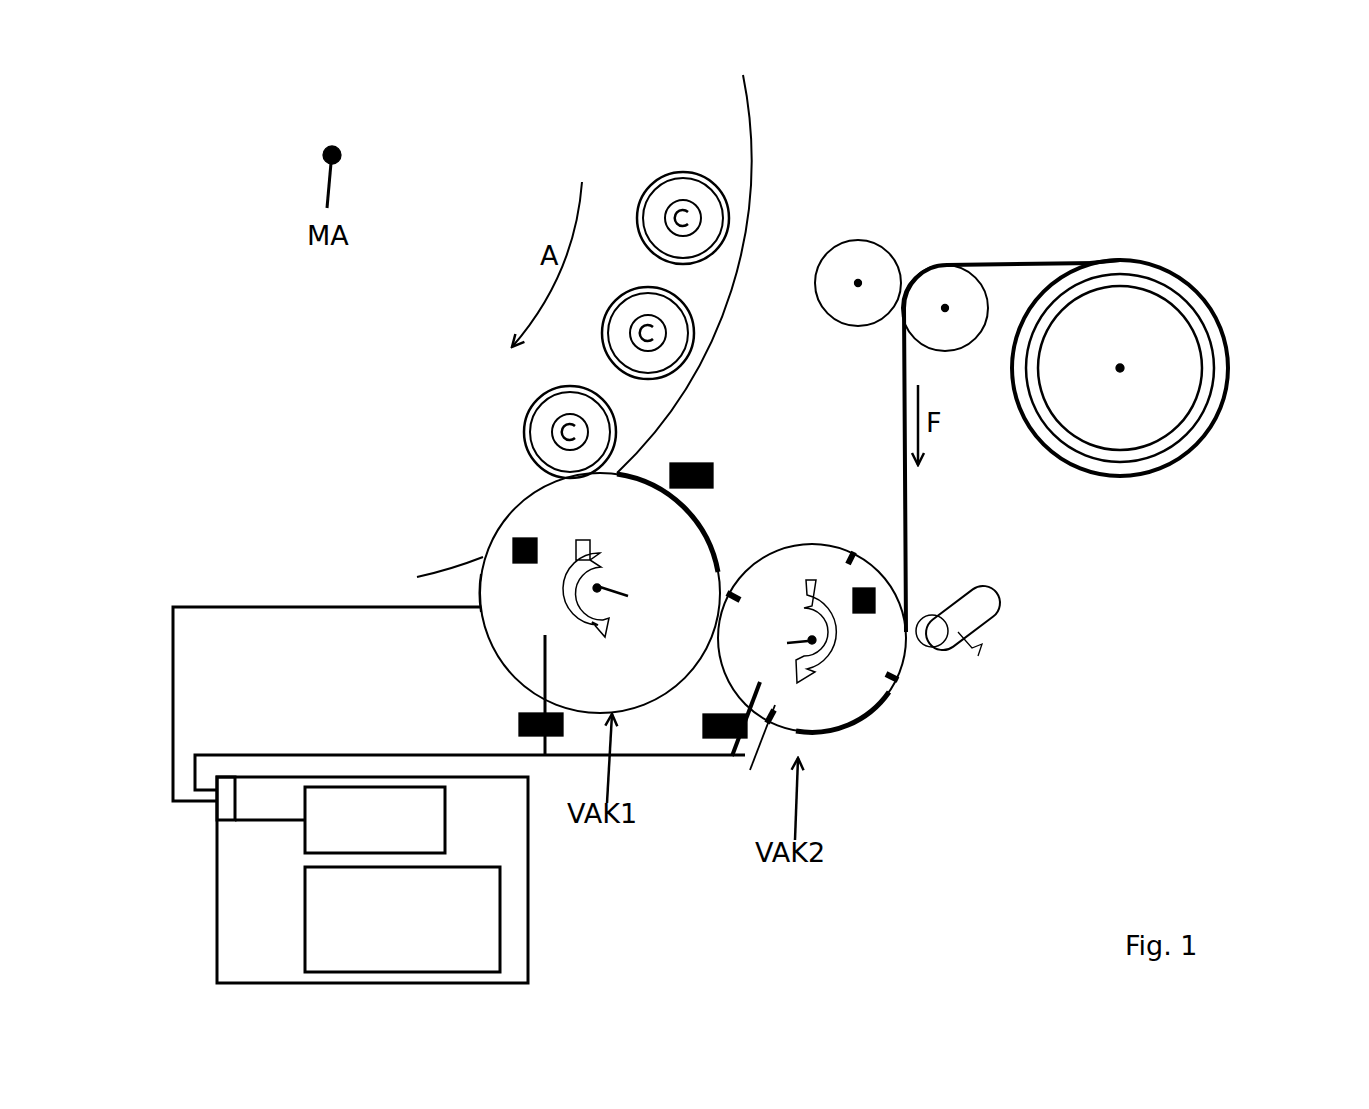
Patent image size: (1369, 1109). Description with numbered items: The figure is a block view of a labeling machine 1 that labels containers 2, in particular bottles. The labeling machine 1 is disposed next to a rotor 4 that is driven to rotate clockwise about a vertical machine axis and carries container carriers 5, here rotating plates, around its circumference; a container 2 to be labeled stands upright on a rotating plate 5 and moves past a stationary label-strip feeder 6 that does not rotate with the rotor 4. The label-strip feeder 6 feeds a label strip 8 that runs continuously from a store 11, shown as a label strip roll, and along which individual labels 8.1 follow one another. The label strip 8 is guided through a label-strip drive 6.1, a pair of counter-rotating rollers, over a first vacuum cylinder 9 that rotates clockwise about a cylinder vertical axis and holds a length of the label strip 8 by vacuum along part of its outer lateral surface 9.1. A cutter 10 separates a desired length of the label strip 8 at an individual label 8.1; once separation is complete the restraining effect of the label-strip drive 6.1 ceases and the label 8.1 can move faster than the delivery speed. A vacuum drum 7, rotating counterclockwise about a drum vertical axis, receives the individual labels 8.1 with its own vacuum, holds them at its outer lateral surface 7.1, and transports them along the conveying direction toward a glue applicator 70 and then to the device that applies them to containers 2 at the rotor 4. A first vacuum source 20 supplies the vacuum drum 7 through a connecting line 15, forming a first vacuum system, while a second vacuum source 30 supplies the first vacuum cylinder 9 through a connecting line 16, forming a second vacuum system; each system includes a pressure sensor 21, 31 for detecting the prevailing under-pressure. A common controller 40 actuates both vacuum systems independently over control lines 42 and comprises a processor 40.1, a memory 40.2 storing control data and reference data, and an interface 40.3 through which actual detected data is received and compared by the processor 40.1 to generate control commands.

The labeling machine 1 is at (982, 155).
The containers 2 is at (684, 195).
The rotor 4 is at (723, 115).
The container carriers 5 is at (702, 178).
The label-strip feeder 6 is at (832, 405).
The label-strip drive 6.1 is at (909, 250).
The vacuum drum 7 is at (447, 618).
The outer lateral surface 7.1 is at (484, 646).
The label strip 8 is at (1057, 258).
The individual labels 8.1 is at (715, 541).
The first vacuum cylinder 9 is at (905, 722).
The outer lateral surface 9.1 is at (744, 758).
The cutter 10 is at (945, 643).
The store 11 is at (1152, 343).
The connecting line 15 is at (548, 663).
The connecting line 16 is at (752, 690).
The first vacuum source 20 is at (519, 728).
The pressure sensor 21 is at (514, 539).
The second vacuum source 30 is at (703, 731).
The pressure sensor 31 is at (865, 590).
The controller 40 is at (540, 913).
The processor 40.1 is at (313, 835).
The memory 40.2 is at (318, 952).
The interface 40.3 is at (227, 803).
The control lines 42 is at (170, 770).
The glue applicator 70 is at (700, 465).